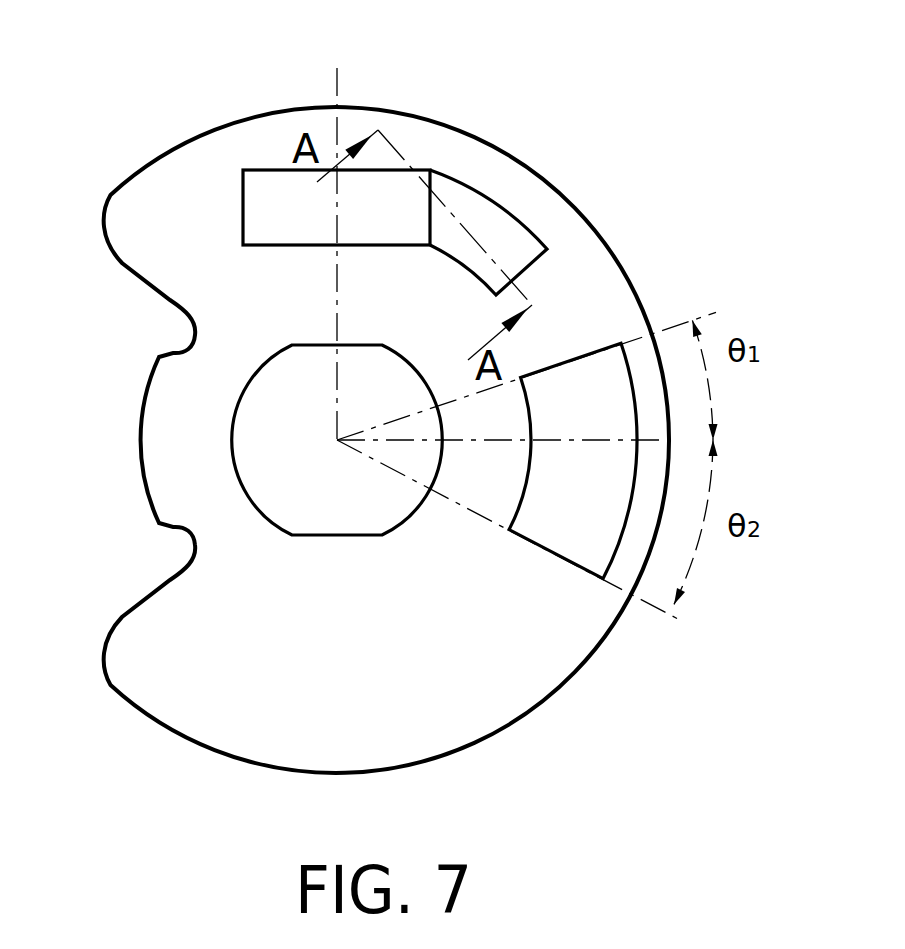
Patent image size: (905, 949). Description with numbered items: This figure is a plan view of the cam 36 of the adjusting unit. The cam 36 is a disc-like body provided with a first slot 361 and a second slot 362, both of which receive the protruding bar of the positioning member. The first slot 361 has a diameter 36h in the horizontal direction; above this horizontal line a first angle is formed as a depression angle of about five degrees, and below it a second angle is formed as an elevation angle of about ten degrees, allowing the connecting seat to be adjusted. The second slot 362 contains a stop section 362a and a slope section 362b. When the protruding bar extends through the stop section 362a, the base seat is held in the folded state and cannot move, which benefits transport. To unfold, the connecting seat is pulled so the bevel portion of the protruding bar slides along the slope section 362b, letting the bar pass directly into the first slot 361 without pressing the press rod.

The cam 36 is at (175, 147).
The diameter 36h is at (669, 440).
The first slot 361 is at (575, 510).
The second slot 362 is at (446, 148).
The stop section 362a is at (268, 188).
The slope section 362b is at (488, 223).